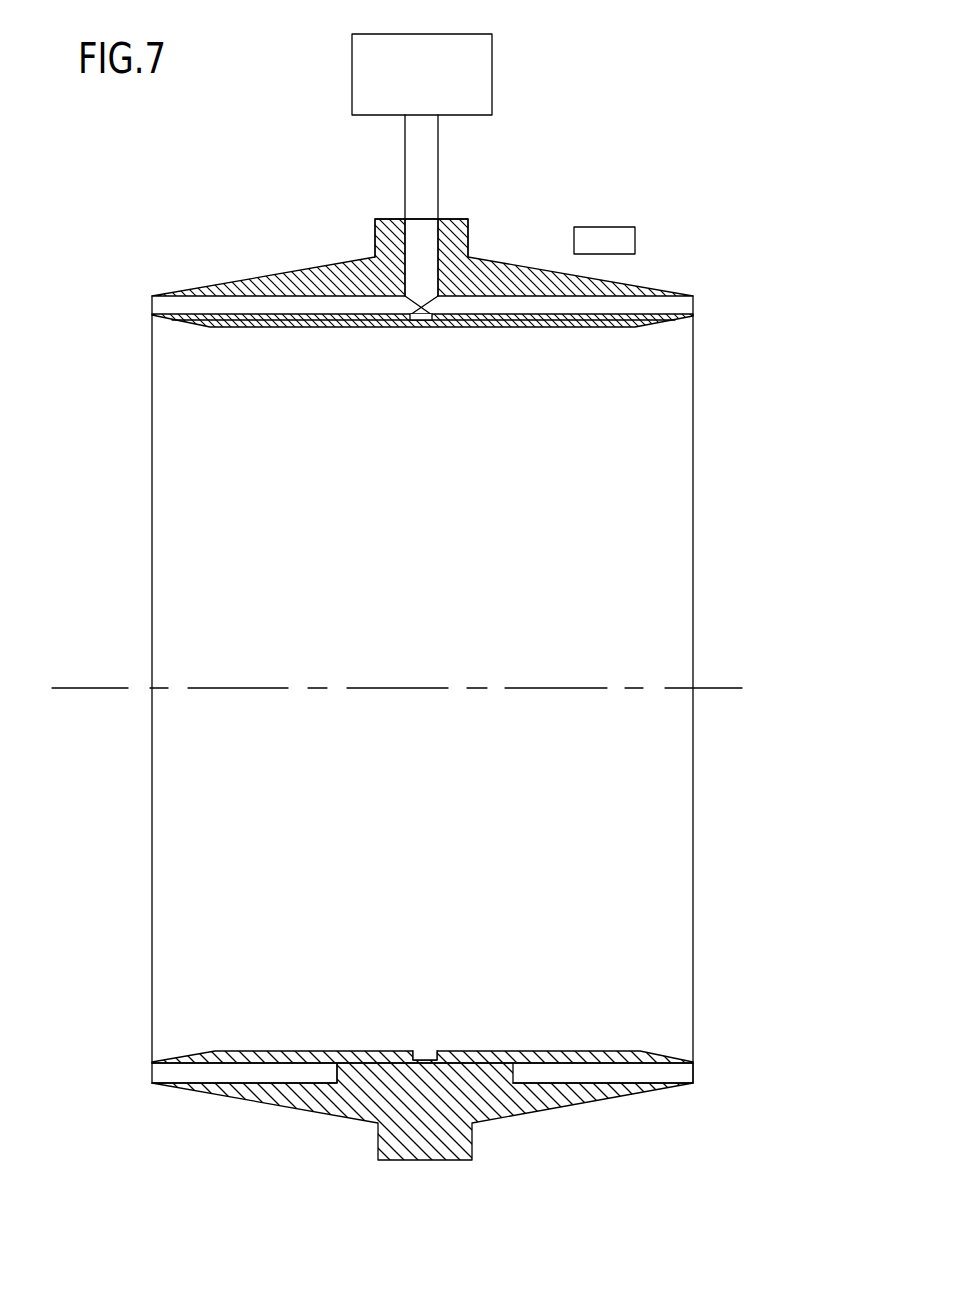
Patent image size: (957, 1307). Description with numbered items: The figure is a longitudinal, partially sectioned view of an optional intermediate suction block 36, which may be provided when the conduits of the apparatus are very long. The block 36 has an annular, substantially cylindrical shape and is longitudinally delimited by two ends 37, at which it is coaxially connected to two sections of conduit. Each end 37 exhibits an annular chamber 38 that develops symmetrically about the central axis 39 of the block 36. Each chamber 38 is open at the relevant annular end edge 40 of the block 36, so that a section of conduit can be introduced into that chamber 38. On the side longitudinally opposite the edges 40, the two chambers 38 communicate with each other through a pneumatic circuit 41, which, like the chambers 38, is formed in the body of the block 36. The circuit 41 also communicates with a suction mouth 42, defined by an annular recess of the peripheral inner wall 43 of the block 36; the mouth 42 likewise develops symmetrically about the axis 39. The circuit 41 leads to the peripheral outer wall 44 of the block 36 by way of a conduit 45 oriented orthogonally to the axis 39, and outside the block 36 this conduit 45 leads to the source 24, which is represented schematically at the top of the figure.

The source 24 is at (409, 84).
The intermediate suction block 36 is at (407, 629).
The end 37 is at (422, 1136).
The annular chamber 38 is at (305, 1072).
The central axis 39 is at (105, 687).
The annular end edge 40 is at (153, 1083).
The pneumatic circuit 41 is at (375, 292).
The suction mouth 42 is at (418, 1047).
The peripheral inner wall 43 is at (396, 983).
The peripheral outer wall 44 is at (385, 217).
The conduit 45 is at (440, 245).